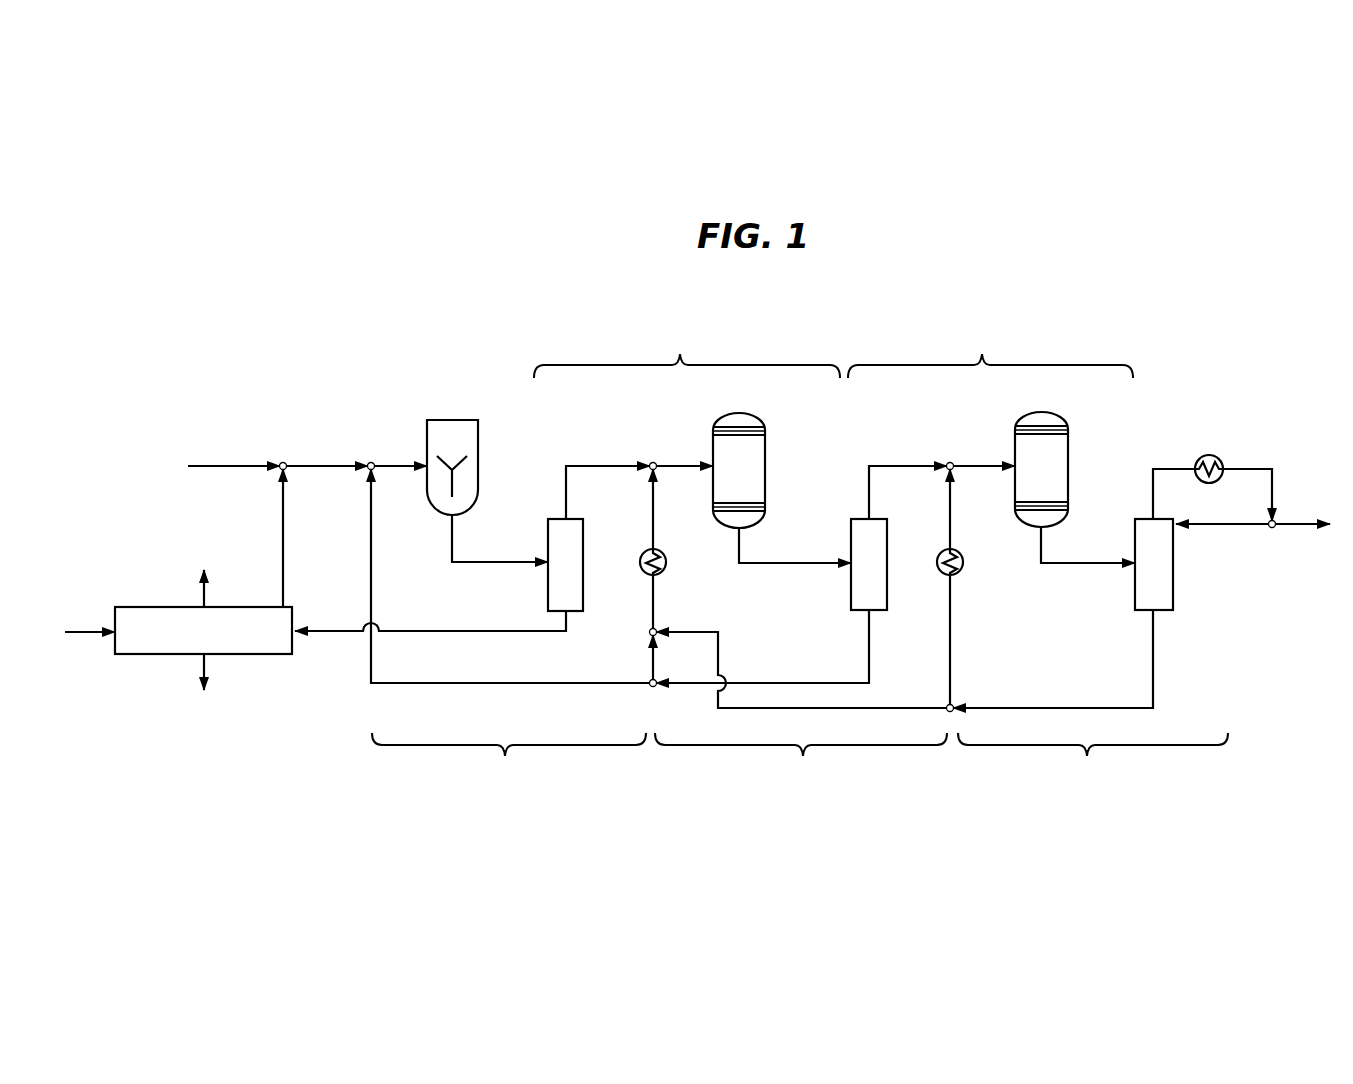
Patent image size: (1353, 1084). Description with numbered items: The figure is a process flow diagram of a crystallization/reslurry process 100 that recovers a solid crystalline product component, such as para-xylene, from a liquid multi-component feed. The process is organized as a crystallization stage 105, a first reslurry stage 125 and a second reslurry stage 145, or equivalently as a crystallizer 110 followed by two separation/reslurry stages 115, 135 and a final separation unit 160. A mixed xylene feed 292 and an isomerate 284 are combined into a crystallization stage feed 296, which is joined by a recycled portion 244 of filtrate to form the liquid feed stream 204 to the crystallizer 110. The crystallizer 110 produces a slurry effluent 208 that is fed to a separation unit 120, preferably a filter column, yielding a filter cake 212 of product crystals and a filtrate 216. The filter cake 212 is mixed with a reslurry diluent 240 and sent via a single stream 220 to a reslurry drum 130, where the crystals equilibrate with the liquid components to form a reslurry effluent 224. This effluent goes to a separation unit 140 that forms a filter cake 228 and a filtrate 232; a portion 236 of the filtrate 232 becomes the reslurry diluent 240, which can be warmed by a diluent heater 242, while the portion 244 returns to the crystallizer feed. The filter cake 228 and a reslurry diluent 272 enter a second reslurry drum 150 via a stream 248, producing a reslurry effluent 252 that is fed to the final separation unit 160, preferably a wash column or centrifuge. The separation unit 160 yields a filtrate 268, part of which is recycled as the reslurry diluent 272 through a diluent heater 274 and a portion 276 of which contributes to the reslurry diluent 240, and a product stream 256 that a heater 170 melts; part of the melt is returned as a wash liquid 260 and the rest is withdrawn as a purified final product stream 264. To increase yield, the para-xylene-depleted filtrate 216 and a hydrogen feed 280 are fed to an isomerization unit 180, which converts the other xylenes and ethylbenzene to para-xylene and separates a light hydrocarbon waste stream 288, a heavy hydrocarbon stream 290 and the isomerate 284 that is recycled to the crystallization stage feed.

The crystallization/reslurry process 100 is at (1150, 335).
The crystallization stage 105 is at (509, 761).
The crystallizer 110 is at (466, 420).
The separation/reslurry stage 115 is at (687, 349).
The separation unit 120 is at (548, 590).
The first reslurry stage 125 is at (801, 761).
The reslurry drum 130 is at (762, 420).
The separation/reslurry stage 135 is at (990, 349).
The separation unit 140 is at (851, 590).
The second reslurry stage 145 is at (1093, 761).
The reslurry drum 150 is at (1065, 420).
The separation unit 160 is at (1135, 600).
The heater 170 is at (1220, 458).
The isomerization unit 180 is at (128, 607).
The liquid feed stream 204 is at (392, 463).
The slurry effluent 208 is at (488, 562).
The filter cake 212 is at (586, 466).
The filtrate 216 is at (402, 631).
The stream 220 is at (678, 466).
The reslurry effluent 224 is at (790, 563).
The filter cake 228 is at (894, 466).
The filtrate 232 is at (798, 683).
The portion of filtrate 236 is at (651, 665).
The reslurry diluent 240 is at (655, 598).
The diluent heater 242 is at (665, 556).
The portion of filtrate 244 is at (488, 683).
The stream 248 is at (976, 466).
The reslurry effluent 252 is at (1083, 563).
The product stream 256 is at (1166, 469).
The wash liquid 260 is at (1220, 524).
The final product stream 264 is at (1298, 524).
The filtrate 268 is at (1064, 708).
The reslurry diluent 272 is at (953, 604).
The diluent heater 274 is at (963, 556).
The portion of filtrate 276 is at (905, 708).
The hydrogen feed 280 is at (85, 617).
The isomerate 284 is at (283, 518).
The light hydrocarbon waste stream 288 is at (204, 590).
The heavy hydrocarbon stream 290 is at (205, 687).
The mixed xylene feed 292 is at (222, 463).
The crystallization stage feed 296 is at (315, 463).